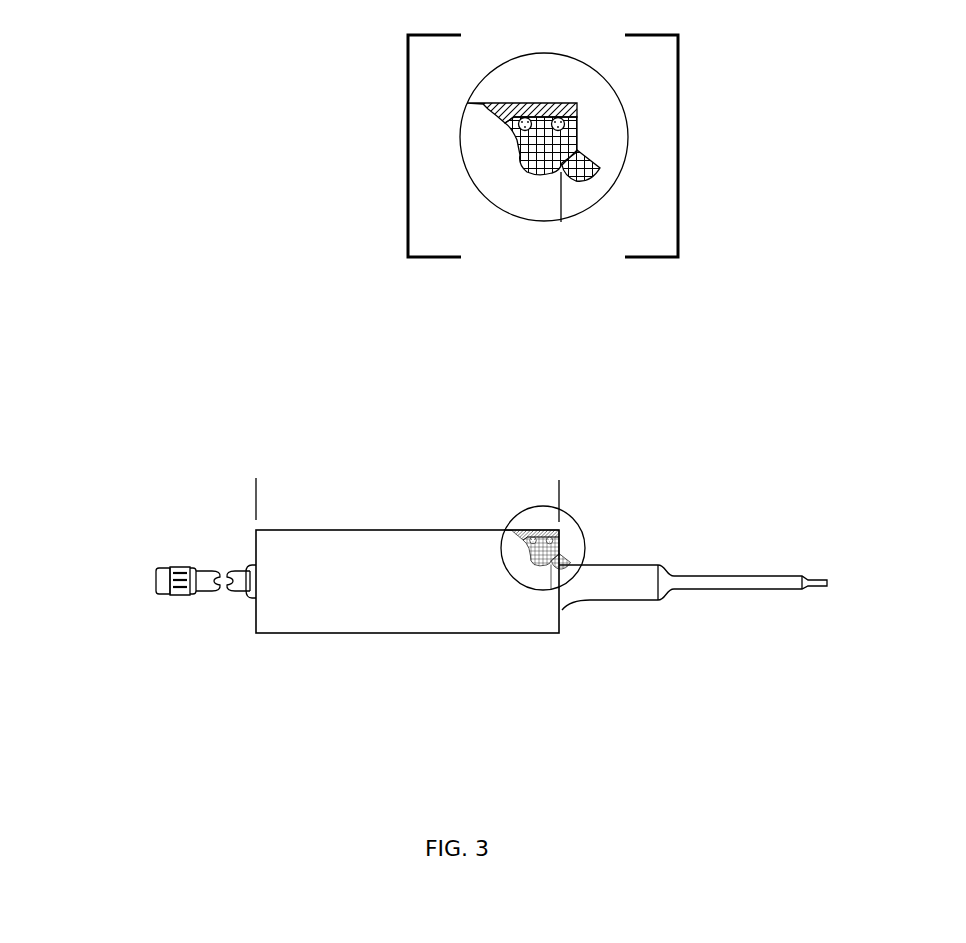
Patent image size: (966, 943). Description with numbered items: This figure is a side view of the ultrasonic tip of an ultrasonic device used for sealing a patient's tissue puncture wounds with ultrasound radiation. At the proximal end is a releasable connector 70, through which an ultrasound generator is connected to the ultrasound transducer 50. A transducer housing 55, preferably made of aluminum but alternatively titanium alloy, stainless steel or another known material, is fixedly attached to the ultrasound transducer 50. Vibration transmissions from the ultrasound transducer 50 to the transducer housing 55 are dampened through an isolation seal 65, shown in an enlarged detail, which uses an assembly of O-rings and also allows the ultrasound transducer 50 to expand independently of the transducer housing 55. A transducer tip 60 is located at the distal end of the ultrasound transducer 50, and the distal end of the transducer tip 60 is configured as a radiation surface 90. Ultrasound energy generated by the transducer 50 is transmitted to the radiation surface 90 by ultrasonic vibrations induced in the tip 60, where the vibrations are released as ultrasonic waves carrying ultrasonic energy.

The ultrasound transducer 50 is at (558, 496).
The transducer housing 55 is at (407, 626).
The transducer tip 60 is at (623, 525).
The isolation seal 65 is at (536, 138).
The releasable connector 70 is at (201, 710).
The radiation surface 90 is at (832, 578).